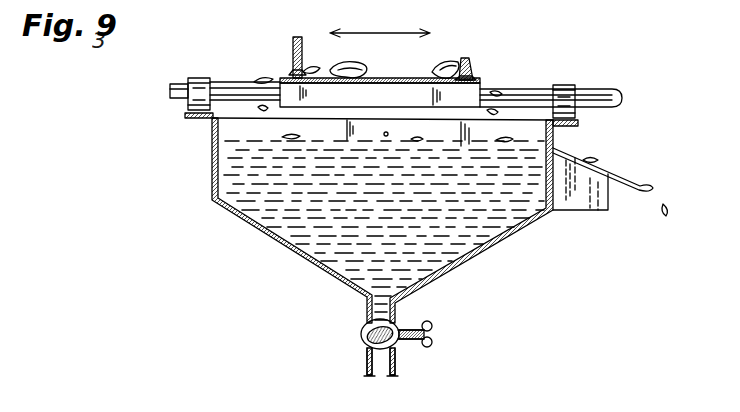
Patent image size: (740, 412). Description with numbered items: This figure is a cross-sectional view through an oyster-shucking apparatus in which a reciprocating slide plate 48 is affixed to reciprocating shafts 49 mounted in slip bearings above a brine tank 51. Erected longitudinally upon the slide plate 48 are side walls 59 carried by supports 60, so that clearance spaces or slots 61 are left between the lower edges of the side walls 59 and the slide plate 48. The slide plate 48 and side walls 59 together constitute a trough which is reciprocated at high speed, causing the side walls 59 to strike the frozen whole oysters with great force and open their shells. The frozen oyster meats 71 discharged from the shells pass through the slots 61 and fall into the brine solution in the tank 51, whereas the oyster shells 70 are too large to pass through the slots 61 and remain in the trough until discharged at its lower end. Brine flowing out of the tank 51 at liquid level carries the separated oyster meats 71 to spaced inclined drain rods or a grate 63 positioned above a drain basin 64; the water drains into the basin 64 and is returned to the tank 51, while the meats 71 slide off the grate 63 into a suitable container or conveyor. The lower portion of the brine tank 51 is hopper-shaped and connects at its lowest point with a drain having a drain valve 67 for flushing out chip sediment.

The slide plate 48 is at (397, 77).
The reciprocating shafts 49 is at (230, 80).
The brine tank 51 is at (211, 165).
The side walls 59 is at (293, 34).
The supports 60 is at (291, 72).
The clearance slots 61 is at (303, 70).
The grate 63 is at (625, 180).
The drain basin 64 is at (582, 204).
The drain valve 67 is at (362, 334).
The oyster shells 70 is at (365, 59).
The frozen oyster meats 71 is at (262, 115).